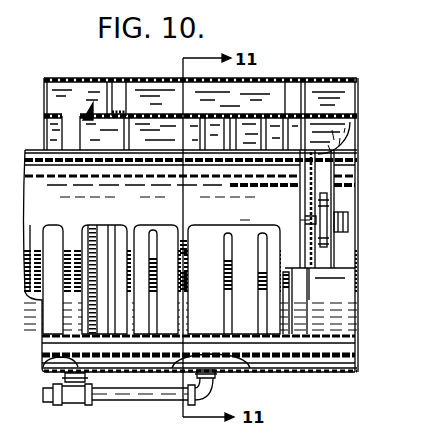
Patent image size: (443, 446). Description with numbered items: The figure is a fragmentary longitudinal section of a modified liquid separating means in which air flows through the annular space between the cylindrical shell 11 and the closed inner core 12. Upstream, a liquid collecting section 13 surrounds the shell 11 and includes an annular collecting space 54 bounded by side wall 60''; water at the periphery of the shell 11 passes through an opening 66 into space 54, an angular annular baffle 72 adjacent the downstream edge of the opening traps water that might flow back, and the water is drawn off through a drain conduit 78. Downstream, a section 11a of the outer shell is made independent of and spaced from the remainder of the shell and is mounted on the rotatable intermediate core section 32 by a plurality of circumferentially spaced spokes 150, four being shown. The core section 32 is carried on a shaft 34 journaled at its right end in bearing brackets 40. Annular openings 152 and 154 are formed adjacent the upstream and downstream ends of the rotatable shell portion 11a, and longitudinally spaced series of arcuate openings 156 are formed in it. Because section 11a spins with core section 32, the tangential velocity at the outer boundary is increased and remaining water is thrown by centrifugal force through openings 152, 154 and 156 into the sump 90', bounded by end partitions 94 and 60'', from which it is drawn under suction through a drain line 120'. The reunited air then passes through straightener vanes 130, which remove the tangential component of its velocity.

The cylindrical shell 11 is at (344, 115).
The shell section 11a is at (253, 337).
The inner core 12 is at (27, 293).
The liquid collecting section 13 is at (339, 78).
The intermediate section of the inner core 32 is at (27, 148).
The shaft 34 is at (310, 221).
The bearing brackets 40 is at (334, 215).
The annular collecting space 54 is at (75, 88).
The side wall 60'' is at (140, 385).
The opening 66 is at (70, 126).
The annular baffle 72 is at (82, 342).
The drain conduit 78 is at (75, 404).
The sump 90' is at (202, 79).
The end partition 94 is at (312, 352).
The drain line 120' is at (221, 387).
The straightener vanes 130 is at (344, 136).
The spokes 150 is at (204, 142).
The annular opening 152 is at (126, 82).
The annular opening 154 is at (286, 82).
The arcuate openings 156 is at (262, 117).